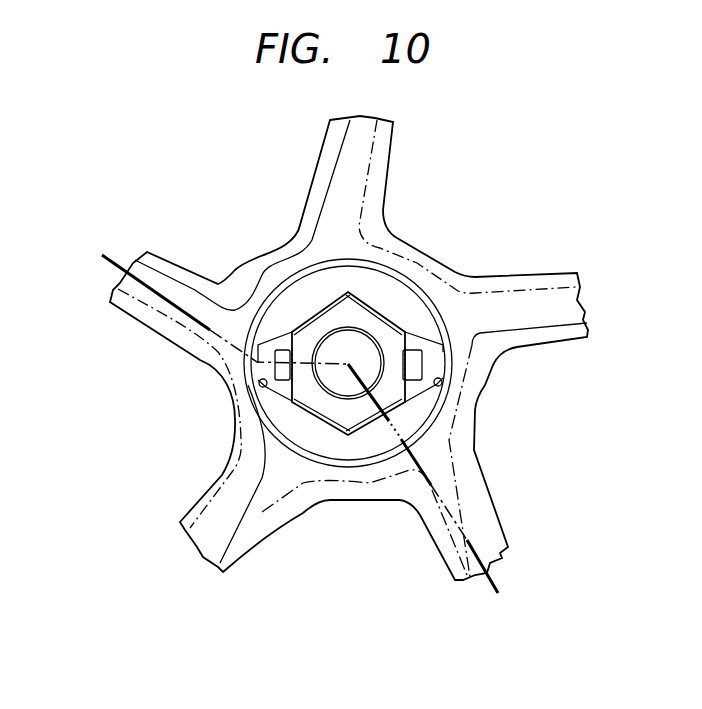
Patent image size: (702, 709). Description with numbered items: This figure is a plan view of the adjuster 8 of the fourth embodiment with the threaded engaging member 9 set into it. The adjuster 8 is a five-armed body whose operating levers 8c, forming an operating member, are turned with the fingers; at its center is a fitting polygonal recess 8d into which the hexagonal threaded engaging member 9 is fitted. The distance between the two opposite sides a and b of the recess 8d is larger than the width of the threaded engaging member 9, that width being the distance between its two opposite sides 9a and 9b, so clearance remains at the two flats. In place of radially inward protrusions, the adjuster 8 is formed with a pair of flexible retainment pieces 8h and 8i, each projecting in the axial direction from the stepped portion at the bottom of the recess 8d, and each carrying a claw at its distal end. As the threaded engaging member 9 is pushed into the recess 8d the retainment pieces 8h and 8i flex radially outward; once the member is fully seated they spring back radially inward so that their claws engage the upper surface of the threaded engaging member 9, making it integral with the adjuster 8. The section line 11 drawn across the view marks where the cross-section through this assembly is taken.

The adjuster 8 is at (567, 272).
The operating levers 8c is at (497, 275).
The flexible retainment piece 8h is at (478, 445).
The flexible retainment piece 8i is at (276, 318).
The fitting polygonal recess 8d is at (257, 364).
The threaded engaging member 9 is at (315, 308).
The side of threaded engaging member 9a is at (460, 343).
The side of threaded engaging member 9b is at (292, 380).
The side of recess a is at (442, 385).
The side of recess b is at (259, 385).
The section line XI-XI 11 is at (102, 255).